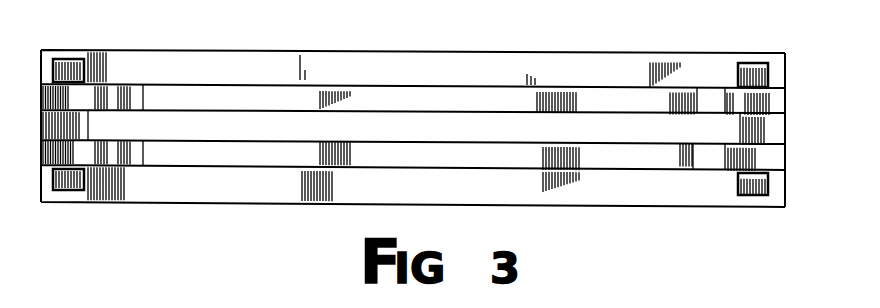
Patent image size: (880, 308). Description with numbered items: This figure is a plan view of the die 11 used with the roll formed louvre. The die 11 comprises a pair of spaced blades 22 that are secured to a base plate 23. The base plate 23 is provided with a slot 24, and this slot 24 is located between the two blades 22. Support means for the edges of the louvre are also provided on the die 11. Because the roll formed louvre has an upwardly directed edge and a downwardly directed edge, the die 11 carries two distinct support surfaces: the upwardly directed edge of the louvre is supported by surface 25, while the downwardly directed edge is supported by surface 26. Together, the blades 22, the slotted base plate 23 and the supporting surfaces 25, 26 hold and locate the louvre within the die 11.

The die 11 is at (237, 207).
The spaced blades 22 is at (589, 88).
The base plate 23 is at (313, 205).
The slot 24 is at (283, 128).
The surface 25 is at (710, 97).
The surface 26 is at (143, 100).